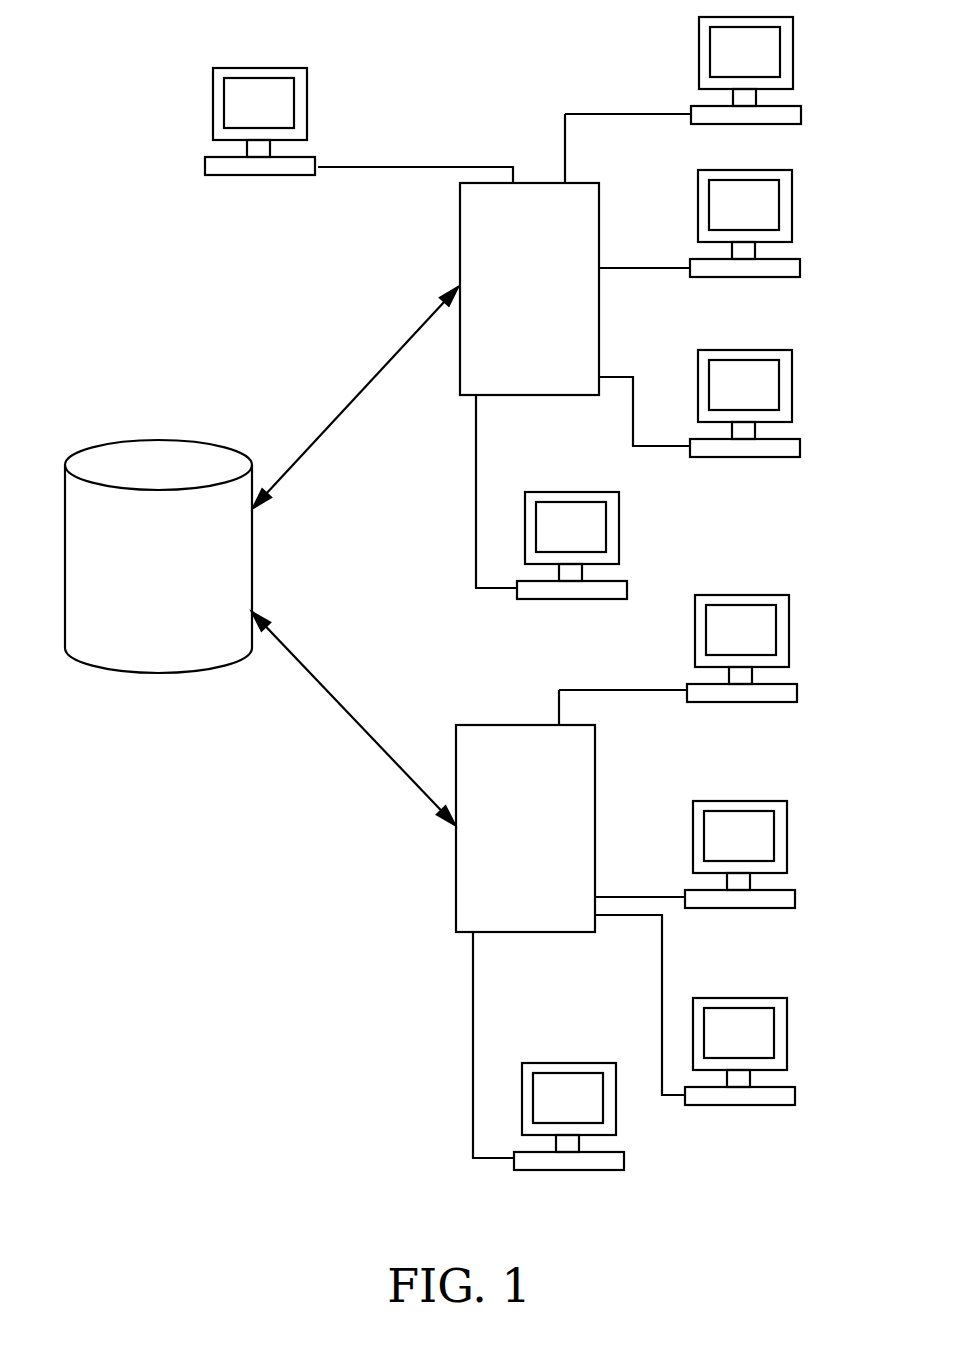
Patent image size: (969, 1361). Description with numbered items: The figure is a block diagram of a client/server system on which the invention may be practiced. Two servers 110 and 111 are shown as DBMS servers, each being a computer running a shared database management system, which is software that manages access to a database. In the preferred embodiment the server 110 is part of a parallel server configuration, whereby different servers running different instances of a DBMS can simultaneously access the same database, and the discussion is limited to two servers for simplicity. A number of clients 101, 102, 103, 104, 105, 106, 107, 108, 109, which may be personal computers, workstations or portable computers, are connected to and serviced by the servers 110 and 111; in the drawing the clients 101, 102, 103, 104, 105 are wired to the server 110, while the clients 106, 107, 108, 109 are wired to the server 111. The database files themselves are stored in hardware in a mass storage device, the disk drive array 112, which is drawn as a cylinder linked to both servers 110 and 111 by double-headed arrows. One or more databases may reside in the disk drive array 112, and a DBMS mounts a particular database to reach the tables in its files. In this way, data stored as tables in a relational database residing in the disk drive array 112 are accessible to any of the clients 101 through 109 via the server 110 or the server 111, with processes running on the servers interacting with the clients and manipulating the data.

The client 101 is at (307, 118).
The client 102 is at (793, 67).
The client 103 is at (792, 218).
The client 104 is at (792, 402).
The client 105 is at (619, 541).
The client 106 is at (789, 645).
The client 107 is at (787, 852).
The client 108 is at (787, 1048).
The client 109 is at (616, 1108).
The server 110 is at (514, 355).
The server 111 is at (508, 893).
The disk drive array 112 is at (140, 648).